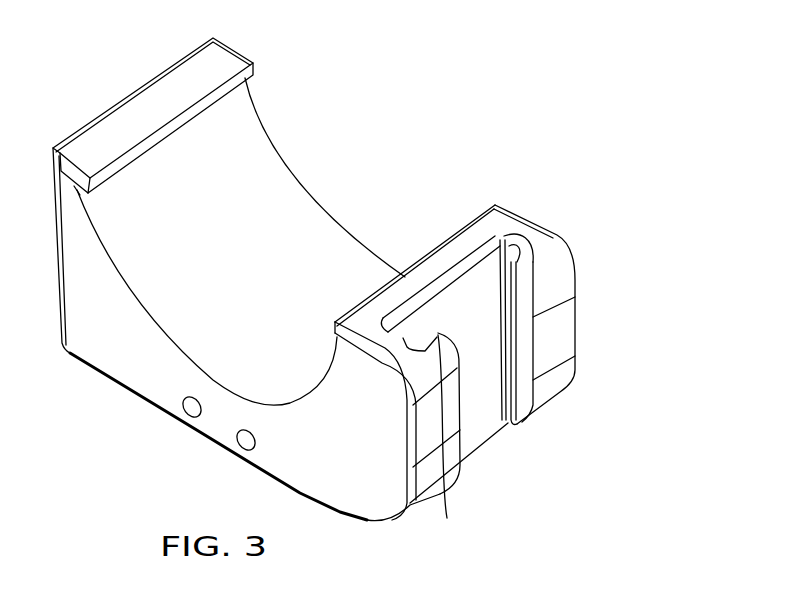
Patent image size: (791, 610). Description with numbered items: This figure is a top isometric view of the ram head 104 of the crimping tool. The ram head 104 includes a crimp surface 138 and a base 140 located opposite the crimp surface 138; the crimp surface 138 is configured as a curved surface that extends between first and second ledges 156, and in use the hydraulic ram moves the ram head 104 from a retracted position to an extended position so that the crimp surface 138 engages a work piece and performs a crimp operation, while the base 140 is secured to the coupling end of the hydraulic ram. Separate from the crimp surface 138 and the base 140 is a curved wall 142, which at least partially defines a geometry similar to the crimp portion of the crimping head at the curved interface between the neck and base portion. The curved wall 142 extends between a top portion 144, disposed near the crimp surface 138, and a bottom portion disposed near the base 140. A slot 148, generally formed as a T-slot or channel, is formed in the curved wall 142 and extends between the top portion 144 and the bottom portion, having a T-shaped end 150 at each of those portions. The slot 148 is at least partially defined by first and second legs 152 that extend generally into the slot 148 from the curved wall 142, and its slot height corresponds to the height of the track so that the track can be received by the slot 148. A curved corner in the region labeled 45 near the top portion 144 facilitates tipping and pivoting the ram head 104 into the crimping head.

The ram head 104 is at (497, 150).
The crimp surface 138 is at (267, 182).
The base 140 is at (213, 440).
The curved wall 142 is at (557, 340).
The top portion 144 is at (453, 250).
The curved surface 45 is at (547, 255).
The slot 148 is at (483, 403).
The T-shaped end 150 is at (408, 310).
The first and second legs 152 is at (533, 292).
The first and second ledges 156 is at (127, 155).